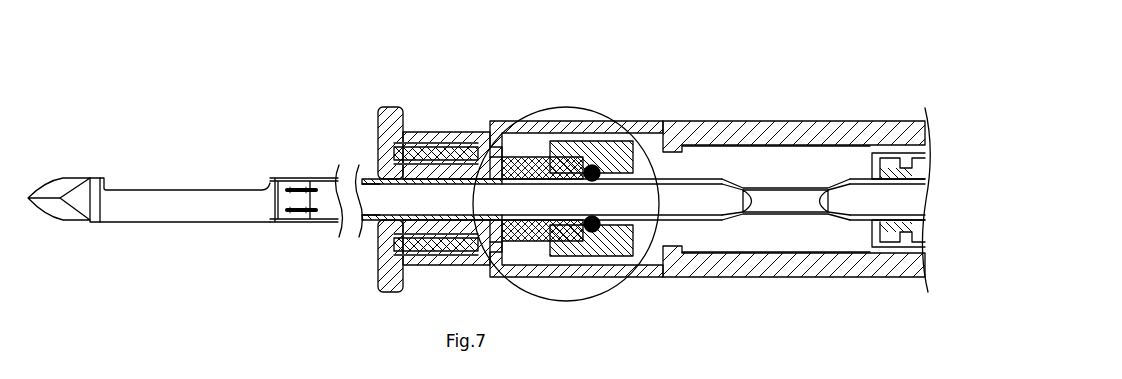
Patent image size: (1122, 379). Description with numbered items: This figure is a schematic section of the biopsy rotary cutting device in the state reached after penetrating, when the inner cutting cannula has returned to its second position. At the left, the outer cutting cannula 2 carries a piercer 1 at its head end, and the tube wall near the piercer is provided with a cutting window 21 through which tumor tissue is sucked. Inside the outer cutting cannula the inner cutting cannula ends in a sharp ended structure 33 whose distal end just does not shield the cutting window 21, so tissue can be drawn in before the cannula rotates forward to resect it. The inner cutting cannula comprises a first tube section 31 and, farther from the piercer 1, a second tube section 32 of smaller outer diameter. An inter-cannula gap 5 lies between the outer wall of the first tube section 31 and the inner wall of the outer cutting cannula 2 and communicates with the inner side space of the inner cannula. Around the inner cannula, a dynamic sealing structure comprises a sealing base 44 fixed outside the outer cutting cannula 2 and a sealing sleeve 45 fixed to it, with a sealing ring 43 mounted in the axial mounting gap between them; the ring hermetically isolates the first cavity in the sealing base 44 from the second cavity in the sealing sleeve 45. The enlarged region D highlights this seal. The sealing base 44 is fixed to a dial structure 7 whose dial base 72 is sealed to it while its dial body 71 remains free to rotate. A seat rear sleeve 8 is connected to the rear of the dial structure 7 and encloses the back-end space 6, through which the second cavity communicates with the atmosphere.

The piercer 1 is at (60, 187).
The cutting window 21 is at (178, 185).
The sharp ended structure 33 is at (288, 185).
The inter-cannula gap 5 is at (370, 179).
The outer cutting cannula 2 is at (376, 216).
The dial body 71 is at (392, 118).
The dial structure 7 is at (446, 126).
The dial base 72 is at (497, 127).
The sealing base 44 is at (526, 165).
The sealing ring 43 is at (592, 165).
The sealing sleeve 45 is at (622, 158).
The detail region D is at (648, 158).
The first tube section 31 is at (703, 180).
The back-end space 6 is at (785, 157).
The second tube section 32 is at (807, 188).
The seat rear sleeve 8 is at (881, 122).